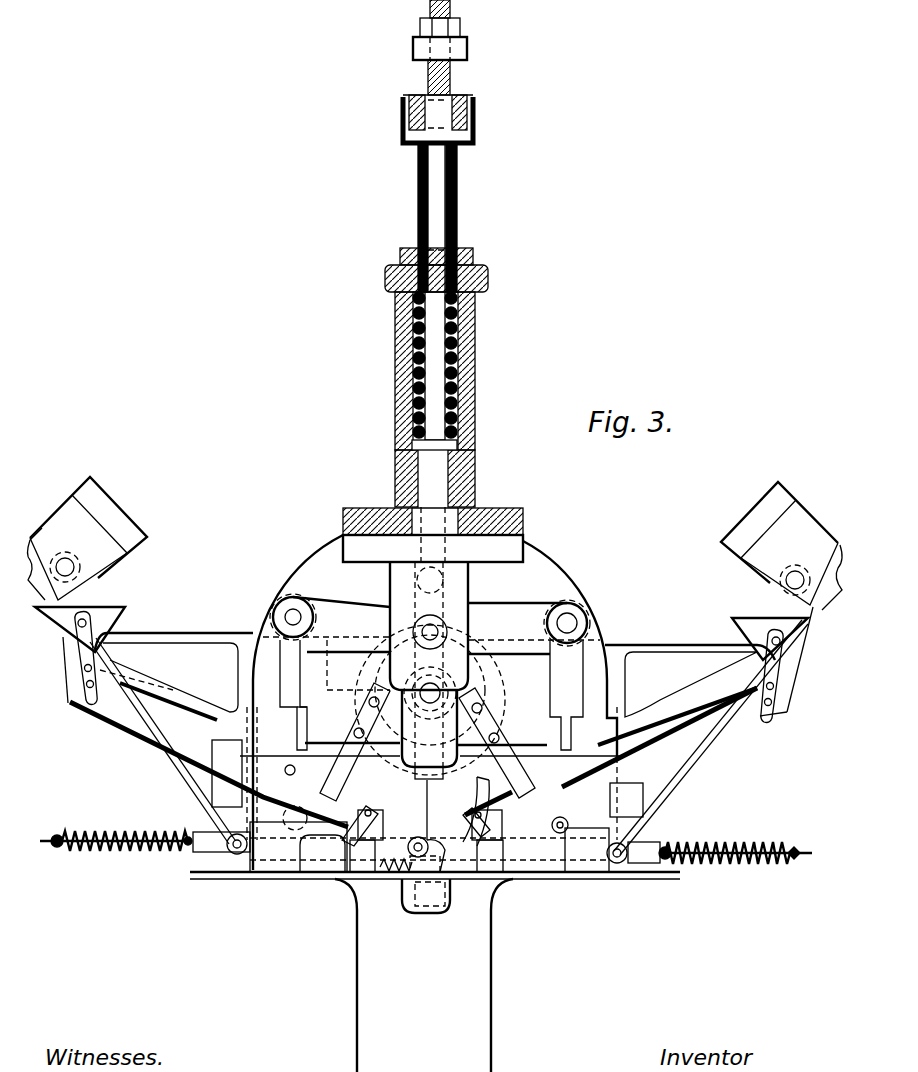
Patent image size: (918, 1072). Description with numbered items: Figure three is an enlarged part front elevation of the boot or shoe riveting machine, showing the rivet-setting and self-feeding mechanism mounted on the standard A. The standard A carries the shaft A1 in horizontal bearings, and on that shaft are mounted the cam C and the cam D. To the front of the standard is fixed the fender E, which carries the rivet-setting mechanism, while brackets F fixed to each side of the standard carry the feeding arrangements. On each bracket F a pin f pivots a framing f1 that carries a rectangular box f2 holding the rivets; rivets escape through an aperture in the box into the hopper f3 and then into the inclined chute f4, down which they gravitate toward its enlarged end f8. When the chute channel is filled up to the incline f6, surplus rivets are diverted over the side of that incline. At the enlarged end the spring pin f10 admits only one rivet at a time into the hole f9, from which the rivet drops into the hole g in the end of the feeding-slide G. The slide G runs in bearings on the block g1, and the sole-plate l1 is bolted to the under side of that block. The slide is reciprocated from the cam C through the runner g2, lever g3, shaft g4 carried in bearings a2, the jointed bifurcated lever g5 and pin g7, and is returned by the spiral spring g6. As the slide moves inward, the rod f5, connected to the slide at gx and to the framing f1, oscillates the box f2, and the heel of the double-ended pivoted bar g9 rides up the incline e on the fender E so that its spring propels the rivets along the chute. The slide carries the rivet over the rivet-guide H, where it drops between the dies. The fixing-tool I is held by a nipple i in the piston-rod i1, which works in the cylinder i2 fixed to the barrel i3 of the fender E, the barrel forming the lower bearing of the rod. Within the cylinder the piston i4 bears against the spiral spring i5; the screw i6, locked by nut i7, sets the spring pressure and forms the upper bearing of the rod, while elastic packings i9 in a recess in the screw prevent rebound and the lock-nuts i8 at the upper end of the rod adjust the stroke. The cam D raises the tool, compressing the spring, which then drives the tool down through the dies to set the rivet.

The standard A is at (424, 975).
The shaft A1 is at (455, 676).
The cam C is at (360, 705).
The cam D is at (390, 606).
The fender E is at (560, 560).
The bracket F is at (438, 662).
The feeding-slide G is at (426, 866).
The rivet-guide H is at (418, 915).
The fixing-tool I is at (427, 807).
The horizontal bearing a2 is at (300, 600).
The incline e is at (365, 768).
The pin f is at (782, 584).
The framing f1 is at (800, 578).
The rectangular box f2 is at (125, 515).
The hopper f3 is at (120, 612).
The chute f4 is at (200, 718).
The rod f5 is at (165, 765).
The incline f6 is at (425, 772).
The enlarged end f8 is at (395, 810).
The hole f9 is at (454, 792).
The spring pin f10 is at (452, 842).
The hole g is at (365, 880).
The block g1 is at (240, 856).
The runner g2 is at (445, 615).
The lever g3 is at (429, 620).
The shaft g4 is at (280, 616).
The jointed bifurcated lever g5 is at (300, 668).
The spiral spring g6 is at (130, 860).
The pin g7 is at (414, 904).
The double-ended pivoted bar g9 is at (548, 816).
The connection point gx is at (620, 872).
The nipple i is at (425, 786).
The piston-rod i1 is at (450, 82).
The cylinder i2 is at (475, 395).
The barrel i3 is at (350, 543).
The piston i4 is at (457, 446).
The spiral spring i5 is at (457, 368).
The screw i6 is at (457, 178).
The nut i7 is at (473, 252).
The nut and washer i8 is at (462, 28).
The elastic packings i9 is at (473, 103).
The sole-plate l1 is at (325, 874).